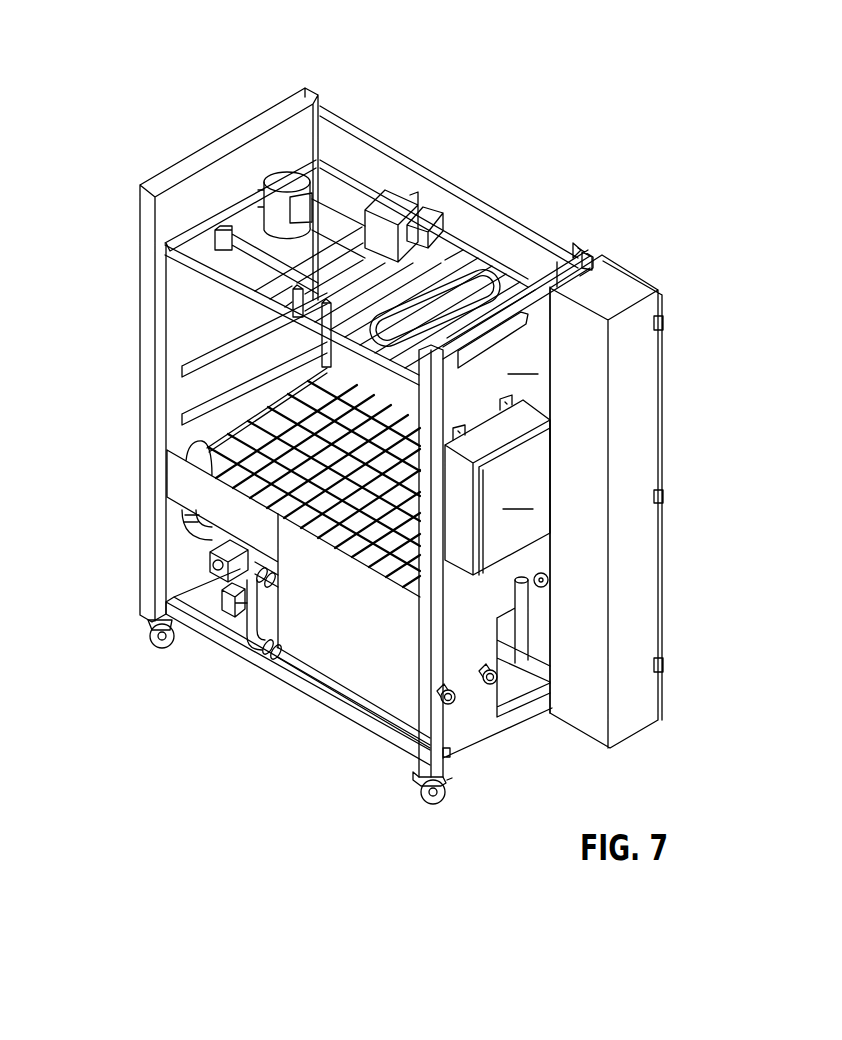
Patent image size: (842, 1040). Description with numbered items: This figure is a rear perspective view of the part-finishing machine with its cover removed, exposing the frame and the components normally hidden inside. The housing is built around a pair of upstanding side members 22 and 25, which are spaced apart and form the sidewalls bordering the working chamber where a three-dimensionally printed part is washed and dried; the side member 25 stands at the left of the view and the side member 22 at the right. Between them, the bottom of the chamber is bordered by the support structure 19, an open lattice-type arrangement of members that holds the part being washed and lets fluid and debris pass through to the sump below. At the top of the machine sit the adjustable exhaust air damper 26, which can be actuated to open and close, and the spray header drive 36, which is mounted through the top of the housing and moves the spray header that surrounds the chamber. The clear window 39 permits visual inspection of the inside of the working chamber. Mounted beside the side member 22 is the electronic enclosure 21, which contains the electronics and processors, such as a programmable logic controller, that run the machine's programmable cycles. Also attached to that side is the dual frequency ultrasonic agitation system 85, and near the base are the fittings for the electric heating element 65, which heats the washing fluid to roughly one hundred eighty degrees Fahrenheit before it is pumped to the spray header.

The support structure 19 is at (192, 443).
The electronic enclosure 21 is at (630, 373).
The side member 22 is at (497, 522).
The side member 25 is at (227, 176).
The adjustable exhaust air damper 26 is at (289, 181).
The spray header drive 36 is at (396, 212).
The clear window 39 is at (462, 293).
The electric heating element 65 is at (447, 703).
The dual frequency ultrasonic agitation system 85 is at (497, 485).